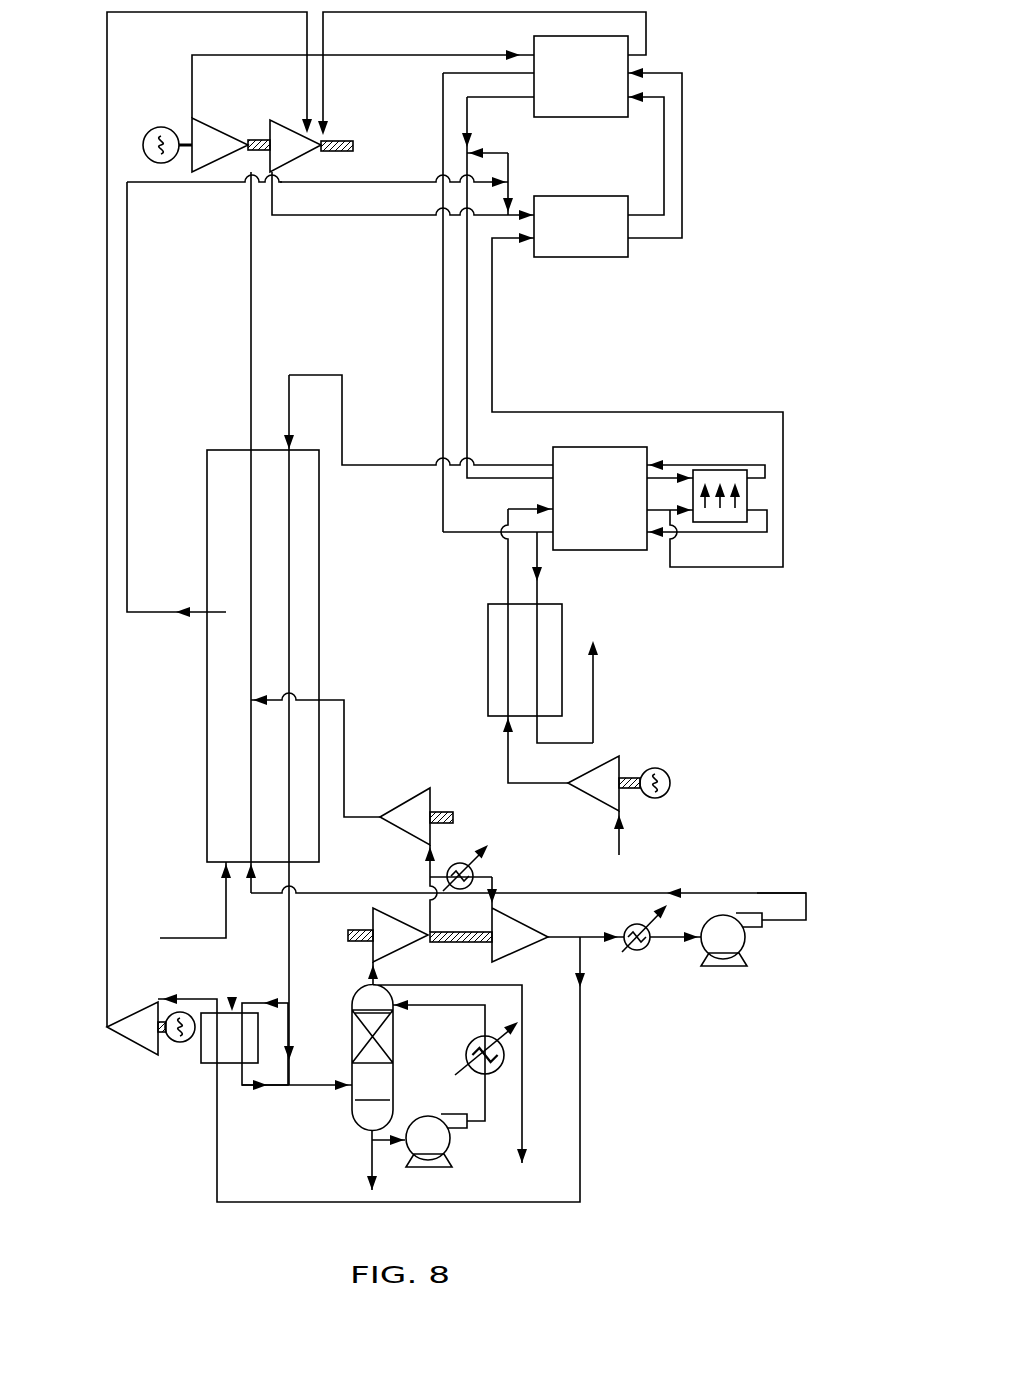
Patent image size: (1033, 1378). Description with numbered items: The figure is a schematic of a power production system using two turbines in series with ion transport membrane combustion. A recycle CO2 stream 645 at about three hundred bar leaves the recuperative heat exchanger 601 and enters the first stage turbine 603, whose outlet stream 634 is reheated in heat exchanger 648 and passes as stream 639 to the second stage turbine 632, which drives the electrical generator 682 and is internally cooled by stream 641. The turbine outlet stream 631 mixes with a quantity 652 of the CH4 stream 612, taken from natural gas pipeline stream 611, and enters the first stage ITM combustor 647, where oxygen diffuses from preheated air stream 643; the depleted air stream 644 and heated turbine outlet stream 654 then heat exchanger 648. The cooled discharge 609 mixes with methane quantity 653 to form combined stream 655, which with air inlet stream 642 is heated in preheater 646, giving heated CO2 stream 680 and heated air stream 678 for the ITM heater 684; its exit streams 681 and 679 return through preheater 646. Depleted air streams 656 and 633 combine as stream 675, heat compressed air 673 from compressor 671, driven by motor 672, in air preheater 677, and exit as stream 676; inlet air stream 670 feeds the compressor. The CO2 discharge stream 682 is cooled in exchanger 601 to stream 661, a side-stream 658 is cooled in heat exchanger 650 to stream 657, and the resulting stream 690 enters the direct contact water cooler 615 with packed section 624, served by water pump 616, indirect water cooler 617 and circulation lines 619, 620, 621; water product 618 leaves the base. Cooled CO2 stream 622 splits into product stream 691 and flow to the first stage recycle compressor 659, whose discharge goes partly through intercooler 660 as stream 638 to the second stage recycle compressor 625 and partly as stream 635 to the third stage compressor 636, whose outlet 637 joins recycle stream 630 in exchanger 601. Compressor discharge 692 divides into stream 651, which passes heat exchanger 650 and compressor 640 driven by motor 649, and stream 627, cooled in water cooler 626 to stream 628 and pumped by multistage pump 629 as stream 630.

The recuperative heat exchanger 601 is at (207, 503).
The first stage turbine 603 is at (206, 170).
The cooled turbine discharge flow 609 is at (467, 113).
The natural gas pipeline stream 611 is at (172, 937).
The CH4 stream 612 is at (400, 184).
The direct contact water cooler 615 is at (395, 1088).
The water pump 616 is at (452, 1150).
The indirect water cooler 617 is at (466, 1054).
The net liquid water product stream 618 is at (368, 1150).
The circulation line 619 is at (385, 1180).
The circulation line 620 is at (485, 1087).
The circulation line 621 is at (487, 1022).
The cooled CO2 stream 622 is at (365, 985).
The packed counter-current flow section 624 is at (400, 1038).
The second stage CO2 recycle compressor 625 is at (545, 942).
The water cooler 626 is at (640, 952).
The remaining CO2 recycle flow stream 627 is at (565, 932).
The supercritical CO2 stream 628 is at (668, 932).
The multistage centrifugal pump 629 is at (746, 940).
The main CO2 recycle stream 630 is at (757, 893).
The second stage turbine outlet stream 631 is at (346, 218).
The second stage turbine 632 is at (275, 120).
The depleted air stream 633 is at (443, 303).
The first stage turbine outlet stream 634 is at (397, 58).
The third stage compressor inlet stream 635 is at (428, 877).
The third stage CO2 compressor 636 is at (388, 810).
The third stage compressor outlet stream 637 is at (347, 740).
The intercooled CO2 stream 638 is at (498, 882).
The second stage turbine inlet stream 639 is at (647, 38).
The compressor 640 is at (130, 1044).
The turbine cooling stream 641 is at (107, 40).
The air inlet stream 642 is at (452, 496).
The preheated air stream 643 is at (492, 333).
The depleted air stream 644 is at (682, 200).
The recycle CO2 stream 645 is at (250, 303).
The preheater 646 is at (570, 446).
The first stage ITM combustor 647 is at (600, 258).
The heat exchanger 648 is at (585, 118).
The electric motor 649 is at (178, 1044).
The heat exchanger 650 is at (232, 996).
The inlet CO2 stream 651 is at (581, 1090).
The CH4 quantity 652 is at (508, 195).
The CH4 quantity 653 is at (508, 158).
The heated turbine outlet stream 654 is at (664, 147).
The combined stream 655 is at (503, 476).
The depleted air stream 656 is at (530, 534).
The cooled side-stream 657 is at (250, 1087).
The side-stream 658 is at (277, 998).
The first stage CO2 recycle compressor 659 is at (372, 925).
The second stage intercooler 660 is at (453, 853).
The cooled CO2 exit stream 661 is at (288, 935).
The inlet air stream 670 is at (619, 845).
The air compressor 671 is at (620, 764).
The electric motor 672 is at (670, 784).
The compressor discharge stream 673 is at (507, 758).
The combined depleted air stream 675 is at (540, 556).
The atmospheric discharge stream 676 is at (593, 698).
The air preheater heat exchanger 677 is at (488, 655).
The heated air stream 678 is at (650, 514).
The depleted air stream 679 is at (757, 535).
The heated CO2 stream 680 is at (668, 464).
The combusted and heated CO2 stream 681 is at (722, 470).
The heated CO2 discharge stream 682 is at (160, 126).
The ITM heater 684 is at (752, 500).
The total CO2/H2O stream 690 is at (312, 1087).
The net CO2 product stream 691 is at (461, 960).
The second stage compressor discharge 692 is at (584, 962).